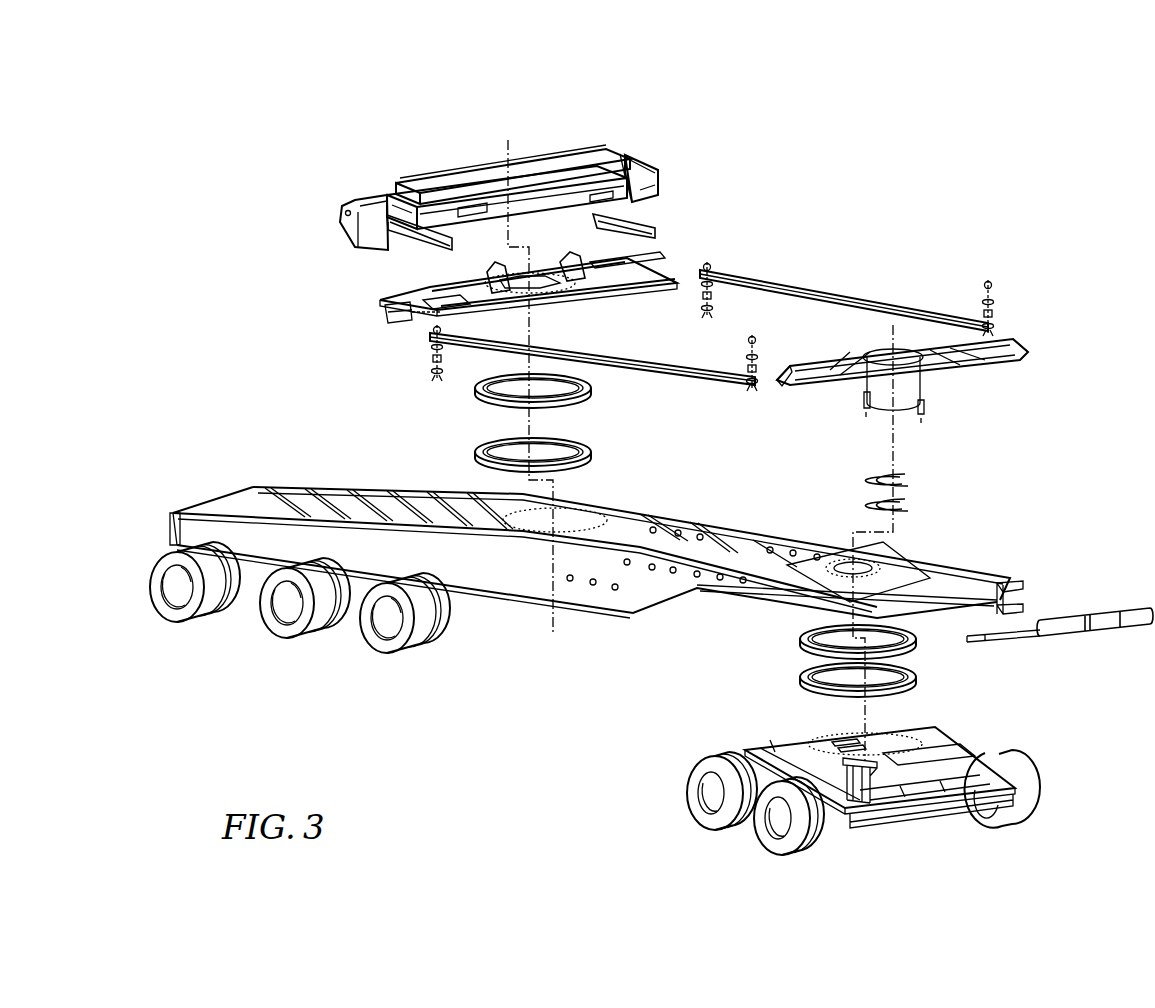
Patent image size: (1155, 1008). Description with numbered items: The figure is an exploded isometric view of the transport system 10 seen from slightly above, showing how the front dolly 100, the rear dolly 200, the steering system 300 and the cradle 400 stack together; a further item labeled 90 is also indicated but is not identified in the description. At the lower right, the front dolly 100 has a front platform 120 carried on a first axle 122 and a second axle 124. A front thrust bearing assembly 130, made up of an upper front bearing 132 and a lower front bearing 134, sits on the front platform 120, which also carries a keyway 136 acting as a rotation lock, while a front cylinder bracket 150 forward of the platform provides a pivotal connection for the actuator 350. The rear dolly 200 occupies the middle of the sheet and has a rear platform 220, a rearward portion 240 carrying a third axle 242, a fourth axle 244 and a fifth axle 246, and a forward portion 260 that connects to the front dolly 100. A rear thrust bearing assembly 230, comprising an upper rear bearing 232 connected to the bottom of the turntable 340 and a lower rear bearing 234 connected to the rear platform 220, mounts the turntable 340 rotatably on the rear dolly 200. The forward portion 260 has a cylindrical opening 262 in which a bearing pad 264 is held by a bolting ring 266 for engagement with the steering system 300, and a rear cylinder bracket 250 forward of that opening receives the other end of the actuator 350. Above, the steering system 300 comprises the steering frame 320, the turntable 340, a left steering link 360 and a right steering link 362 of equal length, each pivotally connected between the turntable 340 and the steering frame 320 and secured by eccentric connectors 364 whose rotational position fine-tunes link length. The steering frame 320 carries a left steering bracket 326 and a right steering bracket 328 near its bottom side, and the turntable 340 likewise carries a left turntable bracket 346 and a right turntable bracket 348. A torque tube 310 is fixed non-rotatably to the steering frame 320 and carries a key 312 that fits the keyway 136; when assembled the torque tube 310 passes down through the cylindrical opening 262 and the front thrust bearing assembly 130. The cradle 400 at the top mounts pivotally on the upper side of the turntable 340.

The transport system 10 is at (1073, 148).
The turntable assembly 90 is at (1067, 330).
The front dolly 100 is at (1062, 750).
The front platform 120 is at (790, 745).
The first axle 122 is at (770, 826).
The second axle 124 is at (700, 792).
The front thrust bearing assembly 130 is at (849, 664).
The upper front bearing 132 is at (918, 645).
The lower front bearing 134 is at (918, 683).
The keyway 136 is at (900, 750).
The front cylinder bracket 150 is at (870, 803).
The rear dolly 200 is at (232, 440).
The rear platform 220 is at (533, 523).
The rear thrust bearing assembly 230 is at (544, 433).
The upper rear bearing 232 is at (592, 390).
The lower rear bearing 234 is at (592, 455).
The rearward portion 240 is at (392, 490).
The third axle 242 is at (387, 640).
The fourth axle 244 is at (280, 622).
The fifth axle 246 is at (185, 600).
The rear cylinder bracket 250 is at (1022, 585).
The forward portion 260 is at (790, 528).
The cylindrical opening 262 is at (900, 565).
The bearing pad 264 is at (920, 505).
The bolting ring 266 is at (920, 480).
The steering system 300 is at (950, 218).
The torque tube 310 is at (907, 392).
The key 312 is at (862, 403).
The steering frame 320 is at (958, 365).
The left steering bracket 326 is at (1010, 356).
The right steering bracket 328 is at (793, 385).
The turntable 340 is at (455, 282).
The left turntable bracket 346 is at (690, 275).
The right turntable bracket 348 is at (385, 322).
The actuator 350 is at (1108, 630).
The left steering link 360 is at (830, 292).
The right steering link 362 is at (598, 350).
The eccentric connectors 364 is at (998, 285).
The cradle 400 is at (640, 160).